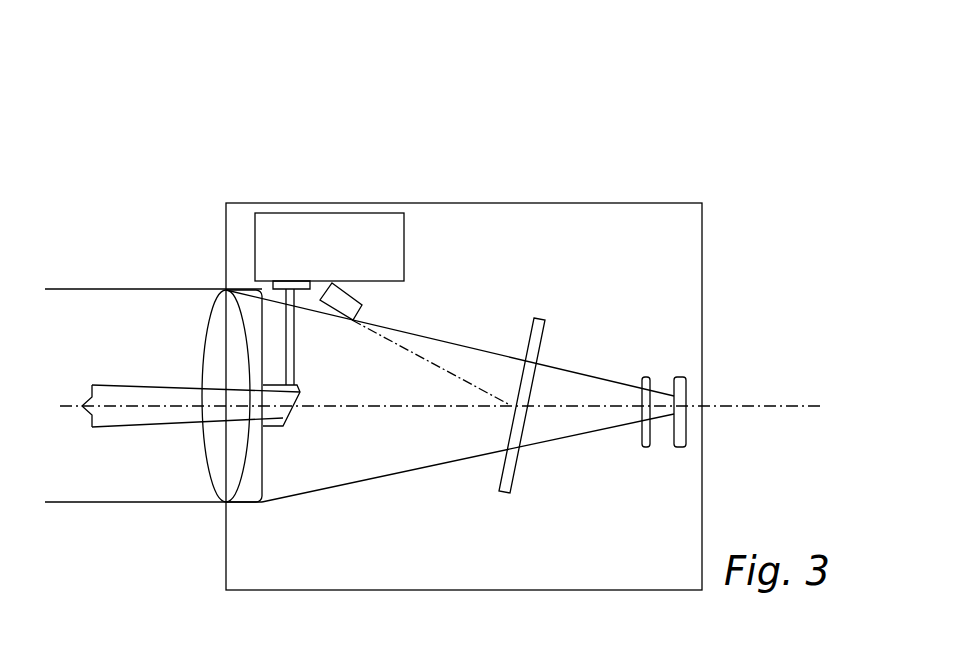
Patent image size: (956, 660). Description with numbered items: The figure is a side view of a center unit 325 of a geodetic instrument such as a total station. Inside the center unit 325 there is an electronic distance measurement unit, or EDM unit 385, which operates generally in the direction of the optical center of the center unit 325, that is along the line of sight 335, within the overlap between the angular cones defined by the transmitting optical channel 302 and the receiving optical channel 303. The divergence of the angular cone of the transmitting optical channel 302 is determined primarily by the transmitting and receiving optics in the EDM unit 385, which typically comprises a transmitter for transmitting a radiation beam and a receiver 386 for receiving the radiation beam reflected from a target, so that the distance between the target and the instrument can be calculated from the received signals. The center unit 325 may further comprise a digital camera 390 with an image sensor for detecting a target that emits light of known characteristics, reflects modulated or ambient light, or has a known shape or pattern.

The center unit 325 is at (232, 164).
The receiving optical channel 303 is at (65, 297).
The transmitting optical channel 302 is at (105, 398).
The electronic distance measurement unit 385 is at (355, 232).
The receiver 386 is at (363, 315).
The line of sight 335 is at (797, 407).
The digital camera 390 is at (686, 385).